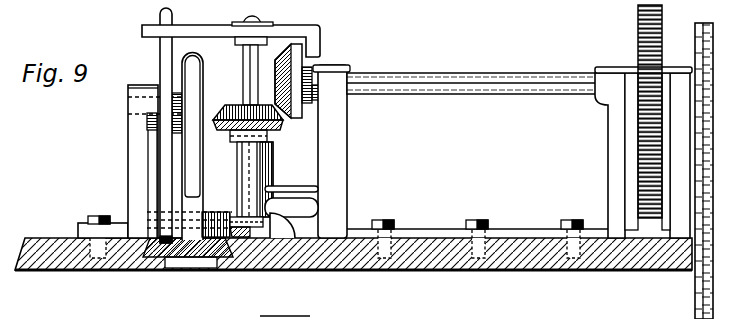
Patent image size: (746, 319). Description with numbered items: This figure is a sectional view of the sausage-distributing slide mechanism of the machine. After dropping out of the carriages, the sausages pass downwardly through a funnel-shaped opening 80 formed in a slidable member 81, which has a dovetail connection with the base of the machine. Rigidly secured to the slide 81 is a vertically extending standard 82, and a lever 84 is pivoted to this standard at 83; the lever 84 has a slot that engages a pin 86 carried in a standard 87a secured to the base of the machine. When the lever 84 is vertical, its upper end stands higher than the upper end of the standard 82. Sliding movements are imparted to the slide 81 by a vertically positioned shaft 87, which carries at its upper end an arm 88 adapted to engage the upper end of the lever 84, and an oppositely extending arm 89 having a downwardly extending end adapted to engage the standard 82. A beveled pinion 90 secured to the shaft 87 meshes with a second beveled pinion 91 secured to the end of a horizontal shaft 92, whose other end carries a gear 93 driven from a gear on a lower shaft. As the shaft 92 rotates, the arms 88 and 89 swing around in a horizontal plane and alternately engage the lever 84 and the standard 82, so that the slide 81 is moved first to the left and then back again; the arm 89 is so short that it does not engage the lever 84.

The opening 80 is at (207, 271).
The slidable member 81 is at (143, 269).
The standard 82 is at (200, 182).
The pivot 83 is at (147, 232).
The lever 84 is at (162, 68).
The pin 86 is at (128, 106).
The shaft 87 is at (248, 80).
The standard 87a is at (132, 163).
The arm 88 is at (220, 34).
The arm 89 is at (322, 40).
The beveled pinion 90 is at (228, 128).
The beveled pinion 91 is at (300, 122).
The shaft 92 is at (442, 86).
The gear 93 is at (640, 42).